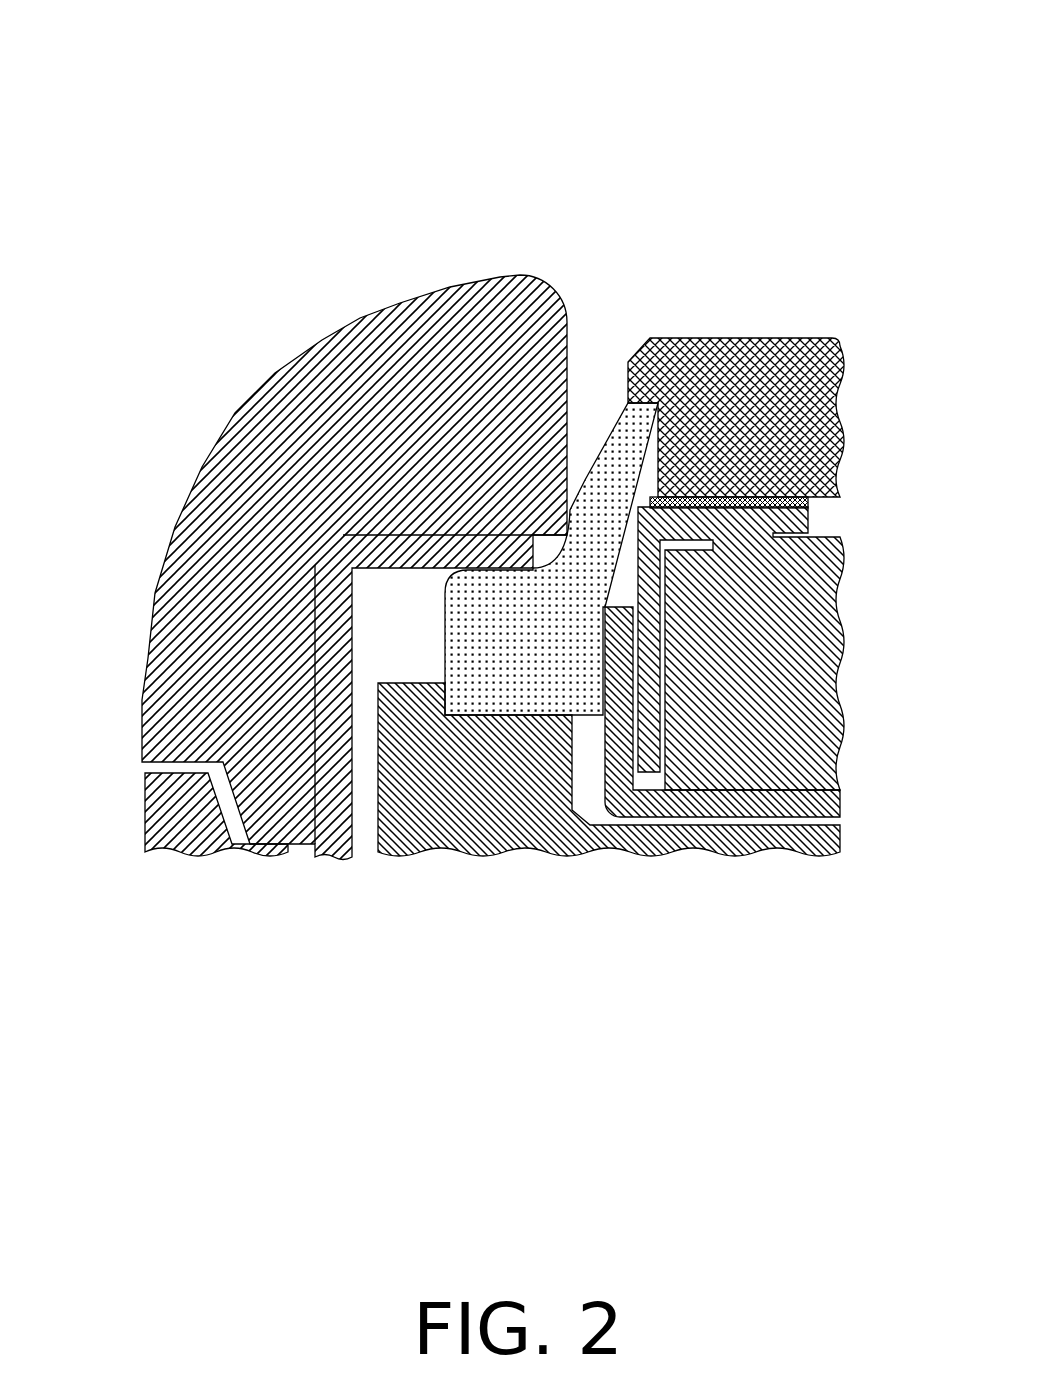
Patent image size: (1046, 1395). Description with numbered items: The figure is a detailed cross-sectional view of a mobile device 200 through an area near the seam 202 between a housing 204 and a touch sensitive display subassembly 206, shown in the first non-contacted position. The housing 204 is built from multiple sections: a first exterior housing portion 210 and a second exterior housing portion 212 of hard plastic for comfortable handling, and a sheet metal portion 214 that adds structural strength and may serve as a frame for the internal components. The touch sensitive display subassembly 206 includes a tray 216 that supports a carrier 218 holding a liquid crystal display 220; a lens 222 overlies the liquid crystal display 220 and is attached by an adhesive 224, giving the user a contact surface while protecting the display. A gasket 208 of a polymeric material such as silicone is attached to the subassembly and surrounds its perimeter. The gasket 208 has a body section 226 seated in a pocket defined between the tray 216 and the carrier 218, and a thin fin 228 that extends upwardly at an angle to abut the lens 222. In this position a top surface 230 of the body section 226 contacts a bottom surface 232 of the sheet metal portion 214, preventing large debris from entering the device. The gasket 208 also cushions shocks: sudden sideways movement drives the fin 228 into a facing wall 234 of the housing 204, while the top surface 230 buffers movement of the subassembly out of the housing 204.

The mobile device 200 is at (658, 102).
The seam 202 is at (614, 282).
The housing 204 is at (150, 425).
The touch sensitive display subassembly 206 is at (650, 915).
The gasket 208 is at (453, 653).
The first exterior housing portion 210 is at (358, 362).
The second exterior housing portion 212 is at (192, 842).
The sheet metal portion 214 is at (333, 845).
The tray 216 is at (502, 830).
The carrier 218 is at (707, 806).
The liquid crystal display 220 is at (805, 598).
The lens 222 is at (645, 365).
The adhesive 224 is at (810, 508).
The body section 226 is at (530, 660).
The fin 228 is at (640, 432).
The top surface 230 is at (505, 572).
The bottom surface 232 is at (433, 578).
The facing wall 234 is at (567, 388).